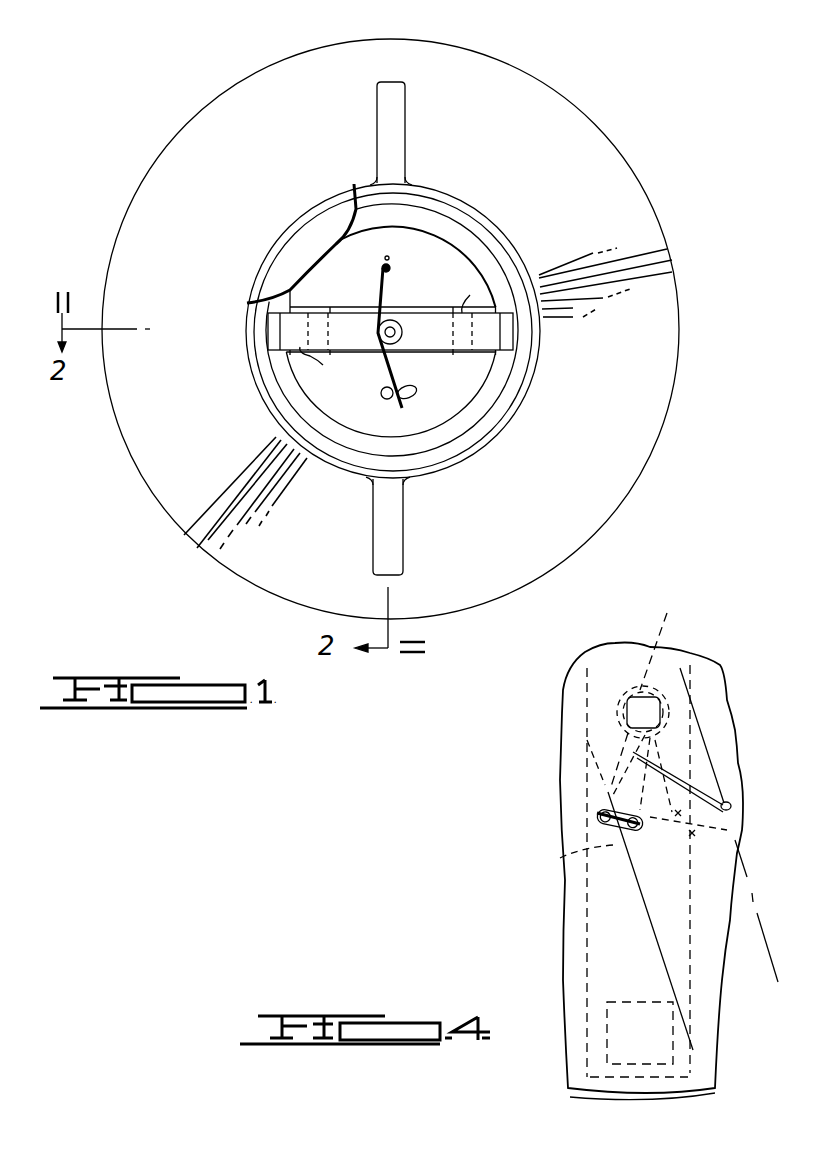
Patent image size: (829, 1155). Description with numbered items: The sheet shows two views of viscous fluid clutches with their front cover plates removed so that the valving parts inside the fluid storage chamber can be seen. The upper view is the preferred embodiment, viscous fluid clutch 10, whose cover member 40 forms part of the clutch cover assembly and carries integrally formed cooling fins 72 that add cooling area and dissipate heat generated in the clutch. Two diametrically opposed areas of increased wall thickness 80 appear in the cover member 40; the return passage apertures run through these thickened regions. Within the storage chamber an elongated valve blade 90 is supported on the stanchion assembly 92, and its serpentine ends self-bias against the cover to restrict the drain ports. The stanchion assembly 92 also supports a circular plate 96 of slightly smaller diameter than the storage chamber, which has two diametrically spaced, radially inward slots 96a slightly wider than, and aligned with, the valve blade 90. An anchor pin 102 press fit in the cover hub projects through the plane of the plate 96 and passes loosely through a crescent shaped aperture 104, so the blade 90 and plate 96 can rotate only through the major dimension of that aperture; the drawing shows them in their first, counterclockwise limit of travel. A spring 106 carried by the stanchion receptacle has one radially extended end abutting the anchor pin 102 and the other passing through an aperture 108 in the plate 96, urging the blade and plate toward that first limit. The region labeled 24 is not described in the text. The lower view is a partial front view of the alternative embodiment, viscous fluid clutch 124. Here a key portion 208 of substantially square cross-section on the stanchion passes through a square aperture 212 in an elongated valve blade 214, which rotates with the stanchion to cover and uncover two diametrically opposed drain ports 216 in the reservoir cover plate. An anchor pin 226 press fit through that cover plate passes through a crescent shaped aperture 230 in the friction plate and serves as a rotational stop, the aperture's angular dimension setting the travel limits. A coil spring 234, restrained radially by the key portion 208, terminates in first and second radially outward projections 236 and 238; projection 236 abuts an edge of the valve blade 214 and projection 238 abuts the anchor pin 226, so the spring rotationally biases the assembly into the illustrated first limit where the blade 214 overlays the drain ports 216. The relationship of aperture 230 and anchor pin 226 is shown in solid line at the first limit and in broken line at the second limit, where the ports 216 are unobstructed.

In FIG. 1, the viscous fluid clutch 10 is at (618, 90).
In FIG. 1, the cover member 40 is at (243, 192).
In FIG. 1, the areas of increased wall thickness 80 is at (397, 113).
In FIG. 1, the fluid 24 is at (318, 250).
In FIG. 1, the circular plate 96 is at (356, 286).
In FIG. 1, the valve blade 90 is at (428, 345).
In FIG. 1, the slots 96a is at (389, 330).
In FIG. 1, the stanchion assembly 92 is at (403, 330).
In FIG. 1, the spring 106 is at (391, 280).
In FIG. 1, the aperture 108 is at (388, 268).
In FIG. 1, the anchor pin 102 is at (381, 393).
In FIG. 1, the crescent shaped aperture 104 is at (418, 390).
In FIG. 1, the cooling fins 72 is at (675, 270).
In FIG. 4, the viscous fluid clutch 124 is at (727, 661).
In FIG. 4, the valve blade 214 is at (608, 943).
In FIG. 4, the drain ports 216 is at (607, 1055).
In FIG. 4, the square aperture 212 is at (627, 712).
In FIG. 4, the key portion 208 is at (650, 708).
In FIG. 4, the coil spring 234 is at (645, 689).
In FIG. 4, the crescent shaped aperture 230 is at (738, 763).
In FIG. 4, the anchor pin 226 is at (635, 835).
In FIG. 4, the first radially outward projection 236 is at (727, 833).
In FIG. 4, the second radially outward projection 238 is at (560, 858).